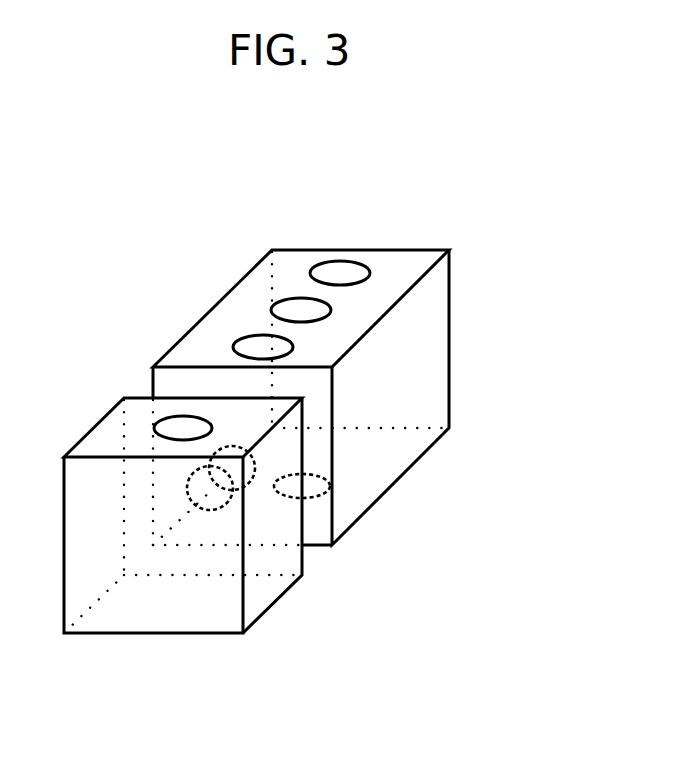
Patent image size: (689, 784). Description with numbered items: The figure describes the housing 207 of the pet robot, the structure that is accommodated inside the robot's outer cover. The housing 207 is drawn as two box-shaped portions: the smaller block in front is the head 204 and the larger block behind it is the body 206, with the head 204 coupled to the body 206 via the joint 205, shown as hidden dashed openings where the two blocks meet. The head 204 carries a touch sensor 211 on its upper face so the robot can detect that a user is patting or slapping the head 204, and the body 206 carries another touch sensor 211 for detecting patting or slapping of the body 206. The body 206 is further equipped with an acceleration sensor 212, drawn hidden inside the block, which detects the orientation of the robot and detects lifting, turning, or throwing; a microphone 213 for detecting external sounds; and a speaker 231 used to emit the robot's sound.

The head 204 is at (200, 635).
The joint 205 is at (223, 497).
The body 206 is at (423, 457).
The housing 207 is at (503, 203).
The touch sensor 211 is at (272, 300).
The acceleration sensor 212 is at (313, 497).
The microphone 213 is at (318, 262).
The speaker 231 is at (230, 347).